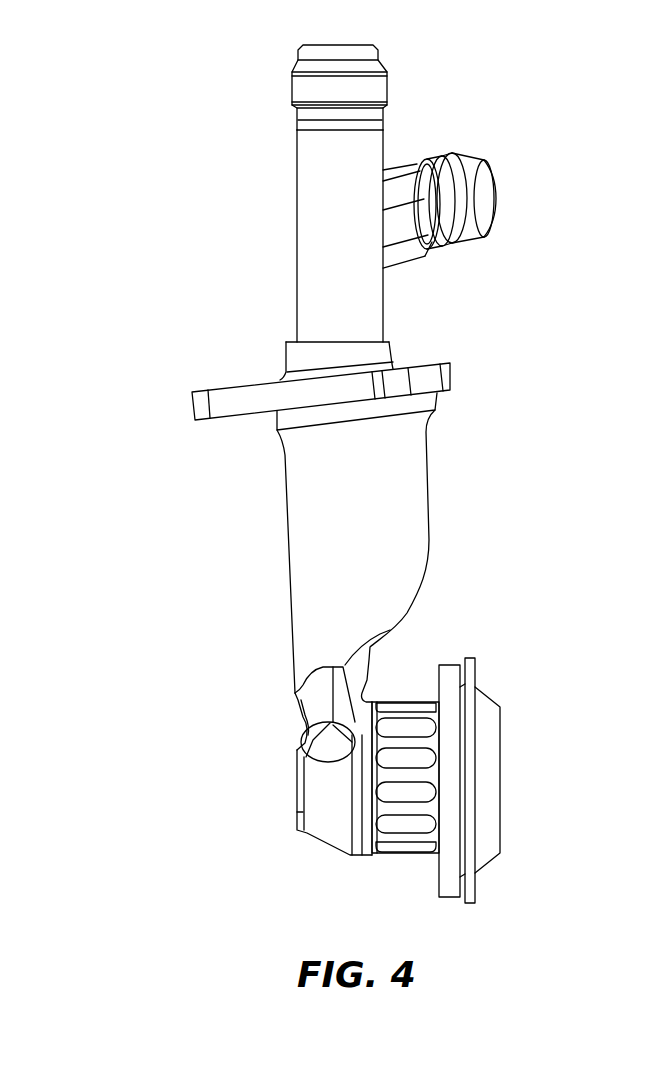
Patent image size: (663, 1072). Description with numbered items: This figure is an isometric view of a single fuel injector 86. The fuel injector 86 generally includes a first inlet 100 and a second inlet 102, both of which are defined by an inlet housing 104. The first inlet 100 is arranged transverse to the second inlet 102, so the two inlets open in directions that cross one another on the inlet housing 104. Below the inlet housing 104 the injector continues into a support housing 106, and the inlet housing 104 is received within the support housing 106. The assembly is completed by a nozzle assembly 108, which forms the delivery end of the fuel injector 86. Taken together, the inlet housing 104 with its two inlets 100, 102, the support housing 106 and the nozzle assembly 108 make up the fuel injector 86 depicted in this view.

The fuel injector 86 is at (113, 430).
The first inlet 100 is at (283, 66).
The second inlet 102 is at (453, 147).
The inlet housing 104 is at (280, 280).
The support housing 106 is at (283, 552).
The nozzle assembly 108 is at (453, 655).